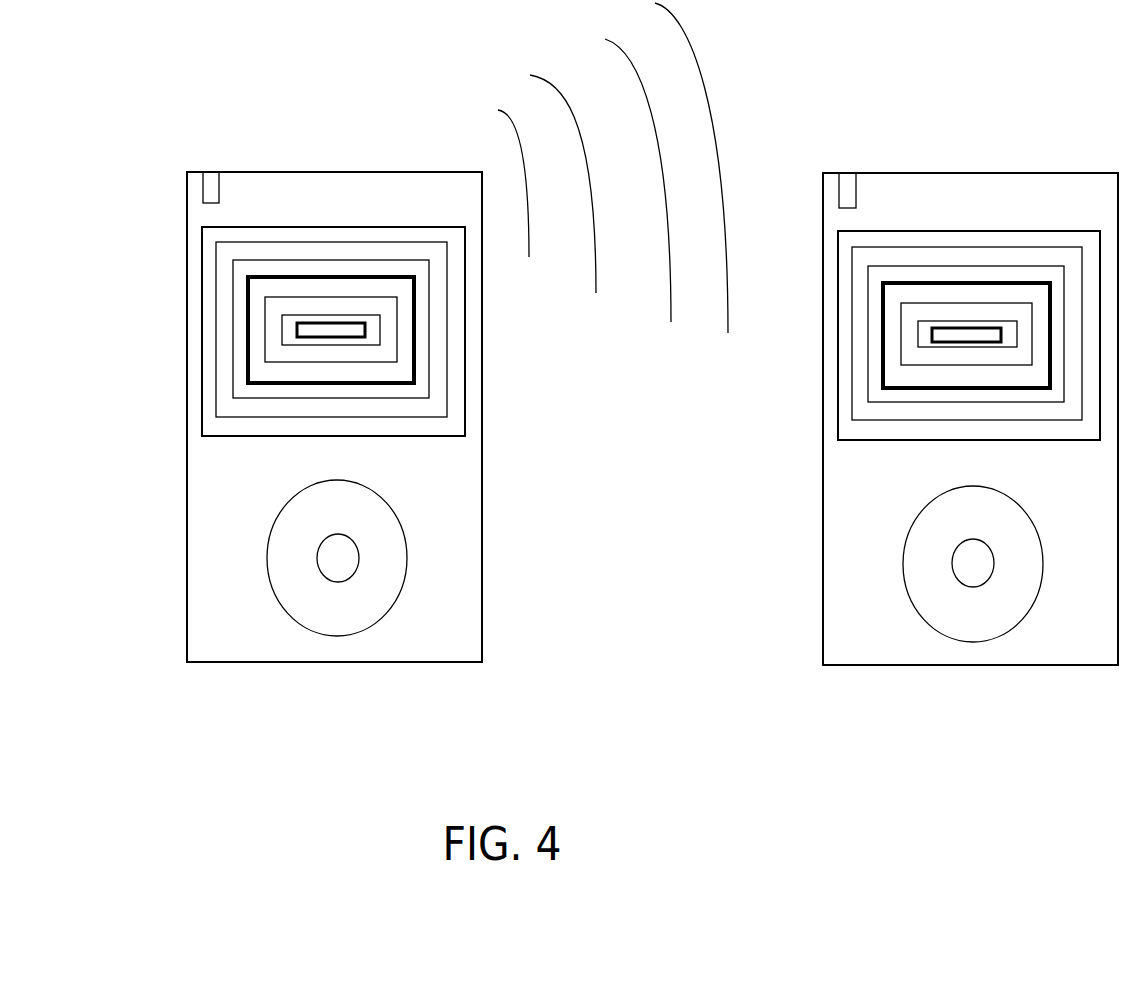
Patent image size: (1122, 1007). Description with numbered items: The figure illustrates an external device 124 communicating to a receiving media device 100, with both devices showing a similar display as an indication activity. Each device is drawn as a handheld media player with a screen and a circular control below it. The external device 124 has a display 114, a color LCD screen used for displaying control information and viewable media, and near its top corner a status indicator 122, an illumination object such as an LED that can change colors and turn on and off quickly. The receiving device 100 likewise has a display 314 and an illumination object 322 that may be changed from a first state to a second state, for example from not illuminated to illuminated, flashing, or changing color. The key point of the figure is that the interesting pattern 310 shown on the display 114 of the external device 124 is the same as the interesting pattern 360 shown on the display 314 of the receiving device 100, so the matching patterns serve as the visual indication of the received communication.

The media device 100 is at (792, 548).
The external device 124 is at (168, 543).
The status indicator 122 is at (212, 170).
The illumination object 322 is at (850, 173).
The display 114 is at (284, 212).
The display 314 is at (937, 217).
The interesting pattern 310 is at (352, 236).
The interesting pattern 360 is at (1022, 255).